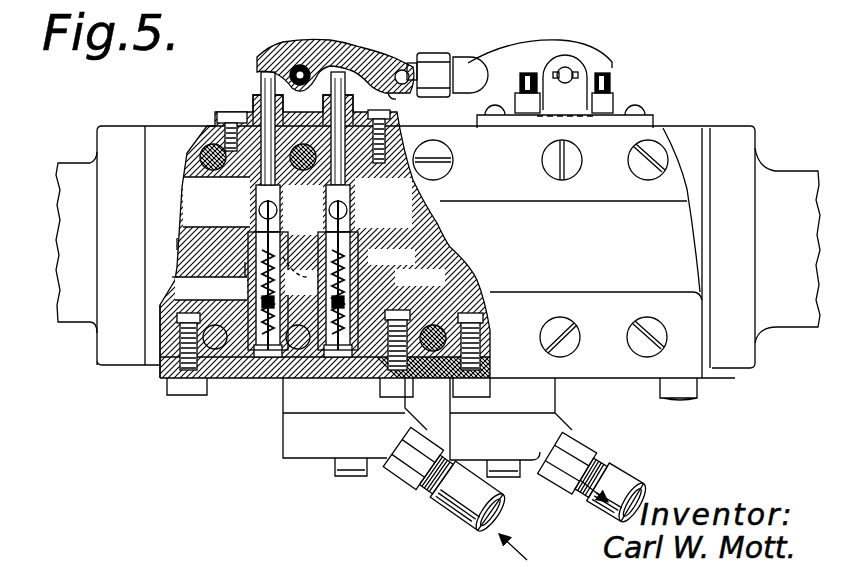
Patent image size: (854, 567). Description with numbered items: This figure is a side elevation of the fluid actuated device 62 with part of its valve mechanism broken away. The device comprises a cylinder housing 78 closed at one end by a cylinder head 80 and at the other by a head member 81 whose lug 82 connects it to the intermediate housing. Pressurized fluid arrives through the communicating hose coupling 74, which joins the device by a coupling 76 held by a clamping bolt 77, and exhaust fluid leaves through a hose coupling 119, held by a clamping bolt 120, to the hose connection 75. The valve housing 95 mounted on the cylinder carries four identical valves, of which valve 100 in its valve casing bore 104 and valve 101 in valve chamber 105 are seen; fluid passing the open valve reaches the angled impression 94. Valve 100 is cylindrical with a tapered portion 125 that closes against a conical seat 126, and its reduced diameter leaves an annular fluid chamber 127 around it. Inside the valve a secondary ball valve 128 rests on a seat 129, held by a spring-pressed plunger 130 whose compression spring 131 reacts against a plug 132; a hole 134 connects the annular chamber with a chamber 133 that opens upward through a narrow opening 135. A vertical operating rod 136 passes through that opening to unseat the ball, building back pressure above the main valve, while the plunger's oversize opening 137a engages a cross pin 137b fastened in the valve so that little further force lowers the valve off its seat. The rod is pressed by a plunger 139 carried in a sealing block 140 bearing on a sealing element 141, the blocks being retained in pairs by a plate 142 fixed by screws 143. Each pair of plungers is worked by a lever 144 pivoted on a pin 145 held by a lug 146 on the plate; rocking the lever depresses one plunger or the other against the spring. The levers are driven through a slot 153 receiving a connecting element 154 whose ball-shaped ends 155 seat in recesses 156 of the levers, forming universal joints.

The fluid actuated device 62 is at (719, 116).
The communicating hose coupling 74 is at (433, 520).
The hose connection 75 is at (618, 480).
The coupling 76 is at (297, 440).
The clamping bolt 77 is at (350, 468).
The cylinder housing 78 is at (683, 133).
The cylinder head 80 is at (737, 372).
The head member 81 is at (112, 126).
The lug 82 is at (560, 64).
The angled impression 94 is at (177, 243).
The valve housing 95 is at (683, 402).
The valve 100 is at (175, 279).
The valve 101 is at (437, 230).
The valve casing bore 104 is at (163, 306).
The valve chamber 105 is at (324, 247).
The hose coupling 119 is at (565, 423).
The clamping bolt 120 is at (503, 467).
The tapered portion 125 is at (247, 228).
The conical seat 126 is at (287, 242).
The annular fluid chamber 127 is at (307, 277).
The secondary ball valve 128 is at (310, 240).
The seat 129 is at (247, 240).
The spring-pressed plunger 130 is at (250, 287).
The compression spring 131 is at (330, 378).
The plug 132 is at (344, 421).
The chamber 133 is at (360, 257).
The hole 134 is at (247, 270).
The narrow opening 135 is at (350, 205).
The vertical operating rod 136 is at (378, 165).
The oversize opening 137a is at (175, 322).
The pin 137b is at (227, 381).
The plunger 139 is at (247, 97).
The sealing block 140 is at (210, 127).
The sealing element 141 is at (187, 173).
The plate 142 is at (248, 110).
The screw 143 is at (223, 107).
The lever 144 is at (376, 40).
The pin 145 is at (310, 62).
The lug 146 is at (287, 47).
The slot 153 is at (430, 60).
The connecting element 154 is at (450, 98).
The ball-shaped end 155 is at (400, 68).
The recess 156 is at (395, 97).